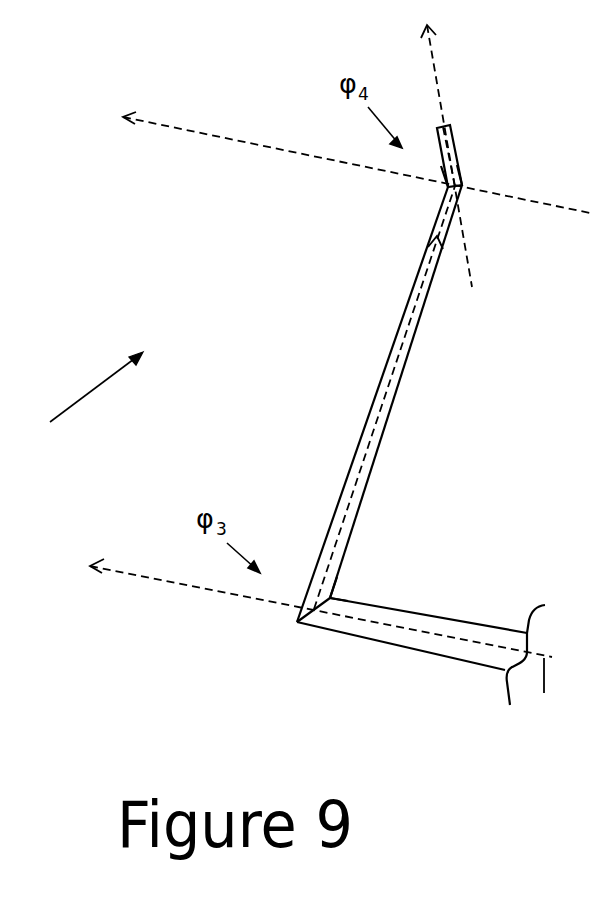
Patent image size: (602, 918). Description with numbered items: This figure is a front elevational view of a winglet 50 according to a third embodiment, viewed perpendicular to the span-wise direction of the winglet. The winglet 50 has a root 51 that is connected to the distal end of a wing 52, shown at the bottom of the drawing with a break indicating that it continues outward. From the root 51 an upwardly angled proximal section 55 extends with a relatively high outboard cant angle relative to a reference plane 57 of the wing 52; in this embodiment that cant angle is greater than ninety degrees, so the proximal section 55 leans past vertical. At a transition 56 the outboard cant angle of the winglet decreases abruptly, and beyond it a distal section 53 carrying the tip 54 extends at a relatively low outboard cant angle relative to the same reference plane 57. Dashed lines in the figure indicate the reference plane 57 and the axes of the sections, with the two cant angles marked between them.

The winglet 50 is at (80, 400).
The root 51 is at (330, 598).
The wing 52 is at (437, 645).
The distal section 53 is at (450, 152).
The tip 54 is at (450, 127).
The proximal section 55 is at (368, 468).
The transition 56 is at (462, 185).
The reference plane 57 is at (549, 694).